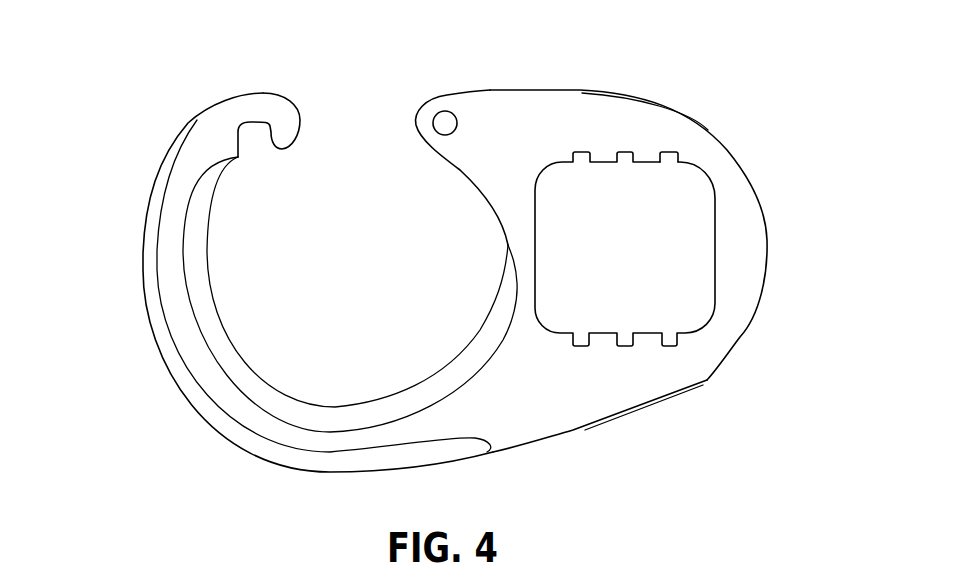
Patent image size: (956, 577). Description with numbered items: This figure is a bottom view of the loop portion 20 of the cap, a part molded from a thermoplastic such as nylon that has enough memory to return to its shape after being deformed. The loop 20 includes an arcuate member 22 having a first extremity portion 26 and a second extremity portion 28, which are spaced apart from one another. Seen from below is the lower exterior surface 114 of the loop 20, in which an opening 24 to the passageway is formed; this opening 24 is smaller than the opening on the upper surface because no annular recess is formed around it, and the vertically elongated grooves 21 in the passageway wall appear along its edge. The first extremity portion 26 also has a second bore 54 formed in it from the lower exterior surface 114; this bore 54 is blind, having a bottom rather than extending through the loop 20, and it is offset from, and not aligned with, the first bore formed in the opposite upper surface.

The loop portion 20 is at (802, 102).
The vertically elongated grooves 21 is at (668, 152).
The arcuate member 22 is at (146, 262).
The opening 24 is at (695, 254).
The first extremity portion 26 is at (453, 165).
The second extremity portion 28 is at (258, 124).
The second bore 54 is at (448, 110).
The lower exterior surface 114 is at (543, 413).